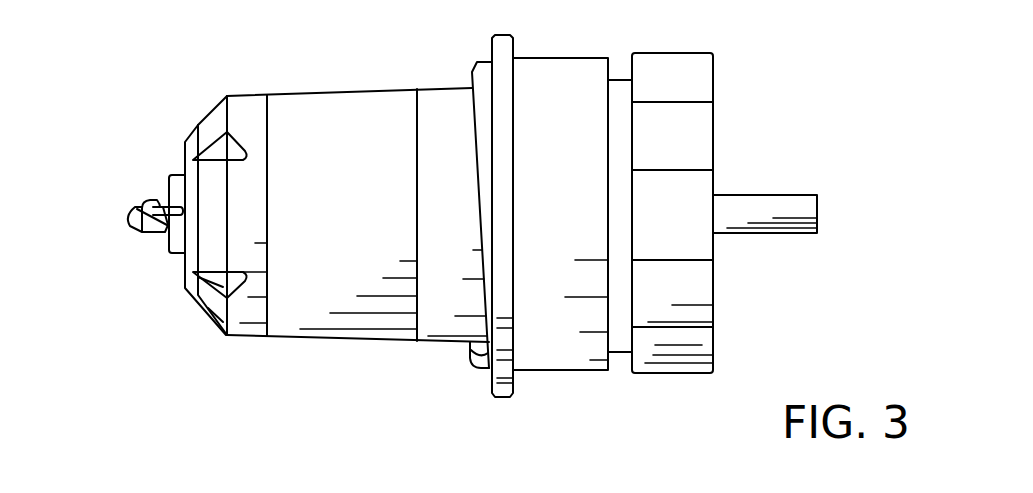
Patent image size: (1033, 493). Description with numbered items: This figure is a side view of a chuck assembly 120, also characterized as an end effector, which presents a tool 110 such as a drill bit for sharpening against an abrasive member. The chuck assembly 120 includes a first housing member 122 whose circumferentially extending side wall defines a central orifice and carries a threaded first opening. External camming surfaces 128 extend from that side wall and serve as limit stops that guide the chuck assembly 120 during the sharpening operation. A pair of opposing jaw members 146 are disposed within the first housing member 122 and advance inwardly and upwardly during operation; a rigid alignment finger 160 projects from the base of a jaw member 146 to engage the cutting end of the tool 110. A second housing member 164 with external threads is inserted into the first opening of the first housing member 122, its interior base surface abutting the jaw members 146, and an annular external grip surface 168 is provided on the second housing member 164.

The chuck assembly 120 is at (158, 66).
The first housing member 122 is at (318, 118).
The external camming surfaces 128 is at (470, 117).
The jaw members 146 is at (161, 196).
The alignment finger 160 is at (148, 200).
The tool 110 is at (127, 215).
The second housing member 164 is at (663, 64).
The external grip surface 168 is at (690, 283).